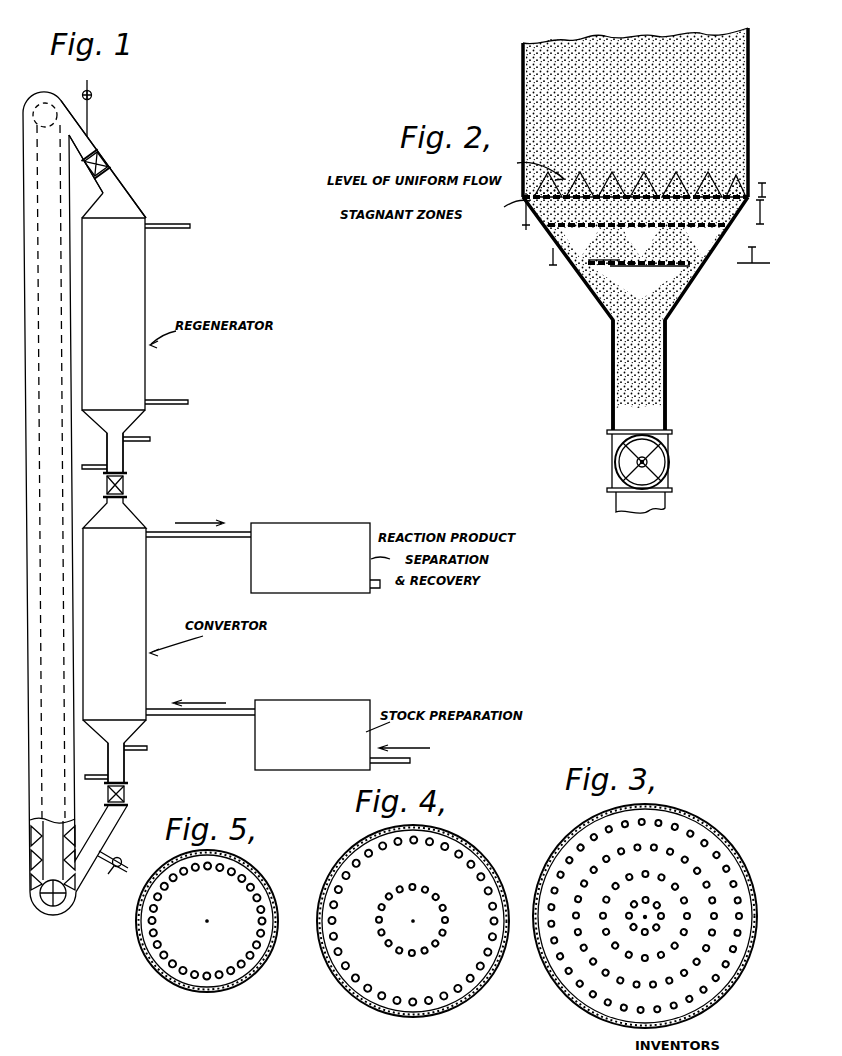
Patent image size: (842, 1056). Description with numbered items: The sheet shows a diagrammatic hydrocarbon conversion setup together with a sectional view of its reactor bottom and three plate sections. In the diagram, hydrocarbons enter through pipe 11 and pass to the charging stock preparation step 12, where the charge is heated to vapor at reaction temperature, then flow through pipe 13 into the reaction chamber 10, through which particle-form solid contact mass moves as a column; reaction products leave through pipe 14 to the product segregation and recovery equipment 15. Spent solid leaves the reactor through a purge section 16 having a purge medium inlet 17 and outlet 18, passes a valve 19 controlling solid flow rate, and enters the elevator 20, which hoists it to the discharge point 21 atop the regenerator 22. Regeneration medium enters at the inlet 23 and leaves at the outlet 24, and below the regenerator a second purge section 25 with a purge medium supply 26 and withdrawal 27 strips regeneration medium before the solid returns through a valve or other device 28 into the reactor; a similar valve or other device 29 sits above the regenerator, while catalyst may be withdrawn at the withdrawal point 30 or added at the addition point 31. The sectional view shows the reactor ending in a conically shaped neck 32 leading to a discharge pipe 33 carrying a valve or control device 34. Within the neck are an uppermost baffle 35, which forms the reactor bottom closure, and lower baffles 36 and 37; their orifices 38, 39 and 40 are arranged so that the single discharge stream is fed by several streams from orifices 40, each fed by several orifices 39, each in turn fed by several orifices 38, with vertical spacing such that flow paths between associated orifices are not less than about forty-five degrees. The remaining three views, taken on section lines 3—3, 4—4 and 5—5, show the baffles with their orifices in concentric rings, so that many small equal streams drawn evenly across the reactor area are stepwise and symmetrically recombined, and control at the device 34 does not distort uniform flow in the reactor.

In FIG. 2, the section line 3— 3 is at (645, 199).
In FIG. 2, the section line 4— 4 is at (644, 219).
In FIG. 2, the section line 5— 5 is at (660, 254).
In FIG. 1, the reaction chamber 10 is at (151, 700).
In FIG. 2, the reaction chamber 10 is at (523, 68).
In FIG. 1, the pipe 11 is at (408, 763).
In FIG. 1, the charging stock preparation step 12 is at (318, 702).
In FIG. 1, the pipe 13 is at (205, 717).
In FIG. 1, the pipe 14 is at (188, 538).
In FIG. 1, the product segregation and recovery equipment 15 is at (313, 522).
In FIG. 1, the purge section 16 is at (125, 773).
In FIG. 1, the purge medium inlet 17 is at (99, 782).
In FIG. 1, the purge medium outlet 18 is at (153, 735).
In FIG. 1, the valve 19 is at (130, 797).
In FIG. 1, the elevator 20 is at (34, 904).
In FIG. 1, the discharge point 21 is at (118, 183).
In FIG. 1, the regenerator 22 is at (147, 306).
In FIG. 1, the regeneration medium inlet 23 is at (173, 400).
In FIG. 1, the regeneration medium outlet 24 is at (173, 222).
In FIG. 1, the purge section 25 is at (124, 462).
In FIG. 1, the purge medium supply 26 is at (97, 459).
In FIG. 1, the purge medium withdrawal 27 is at (148, 437).
In FIG. 1, the valve or other device 28 is at (128, 494).
In FIG. 1, the valve or other device 29 is at (106, 159).
In FIG. 1, the catalyst withdrawal point 30 is at (111, 879).
In FIG. 1, the catalyst addition point 31 is at (92, 96).
In FIG. 2, the conically shaped neck 32 is at (692, 290).
In FIG. 3, the conically shaped neck 32 is at (716, 812).
In FIG. 4, the conically shaped neck 32 is at (480, 868).
In FIG. 5, the conically shaped neck 32 is at (265, 893).
In FIG. 2, the discharge pipe 33 is at (667, 383).
In FIG. 2, the valve or control device 34 is at (672, 452).
In FIG. 2, the uppermost baffle 35 is at (730, 197).
In FIG. 3, the uppermost baffle 35 is at (597, 1010).
In FIG. 2, the baffle 36 is at (585, 267).
In FIG. 4, the baffle 36 is at (382, 975).
In FIG. 2, the baffle 37 is at (622, 266).
In FIG. 5, the baffle 37 is at (190, 958).
In FIG. 2, the orifices 38 is at (705, 196).
In FIG. 3, the orifices 38 is at (630, 907).
In FIG. 2, the orifices 39 is at (563, 226).
In FIG. 4, the orifices 39 is at (387, 938).
In FIG. 2, the orifices 40 is at (596, 264).
In FIG. 5, the orifices 40 is at (160, 968).